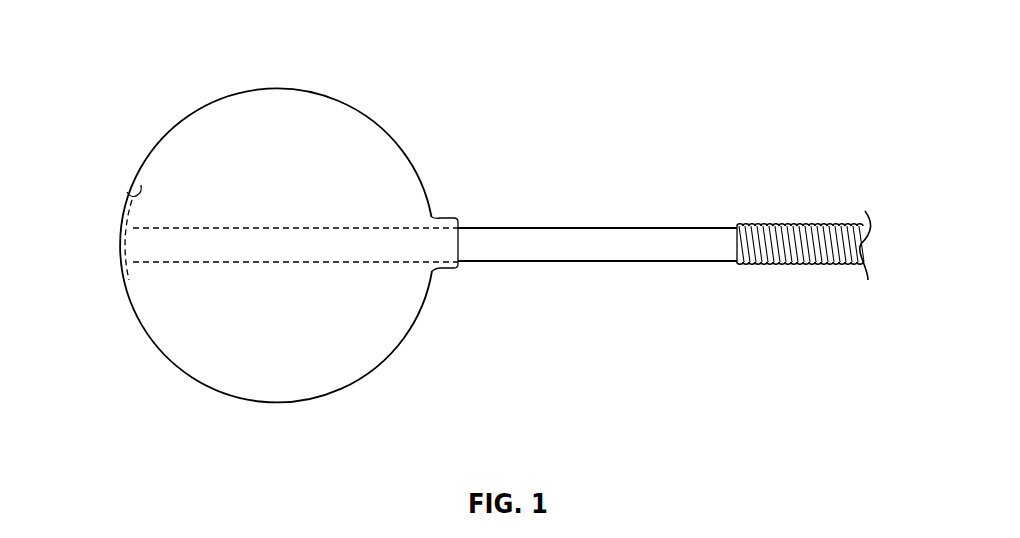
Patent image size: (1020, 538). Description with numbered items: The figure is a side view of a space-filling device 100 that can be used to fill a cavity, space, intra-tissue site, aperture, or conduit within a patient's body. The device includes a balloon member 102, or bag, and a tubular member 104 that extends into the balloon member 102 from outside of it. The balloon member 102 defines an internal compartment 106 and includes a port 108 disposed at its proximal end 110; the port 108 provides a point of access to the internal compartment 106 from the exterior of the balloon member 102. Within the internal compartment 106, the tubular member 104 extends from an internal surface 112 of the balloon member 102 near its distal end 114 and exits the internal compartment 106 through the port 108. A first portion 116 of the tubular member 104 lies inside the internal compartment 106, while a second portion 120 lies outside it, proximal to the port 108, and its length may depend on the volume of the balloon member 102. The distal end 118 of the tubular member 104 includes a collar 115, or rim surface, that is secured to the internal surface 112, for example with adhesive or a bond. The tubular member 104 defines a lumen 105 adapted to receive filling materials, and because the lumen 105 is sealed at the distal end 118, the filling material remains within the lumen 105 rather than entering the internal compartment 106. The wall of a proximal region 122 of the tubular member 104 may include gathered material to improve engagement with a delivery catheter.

The space-filling device 100 is at (690, 48).
The balloon member 102 is at (288, 88).
The tubular member 104 is at (641, 226).
The lumen 105 is at (574, 236).
The internal compartment 106 is at (294, 144).
The port 108 is at (448, 208).
The proximal end 110 is at (470, 219).
The internal surface 112 is at (161, 152).
The distal end 114 is at (115, 260).
The collar 115 is at (141, 185).
The first portion 116 is at (428, 270).
The distal end 118 is at (145, 268).
The second portion 120 is at (880, 283).
The proximal region 122 is at (817, 200).